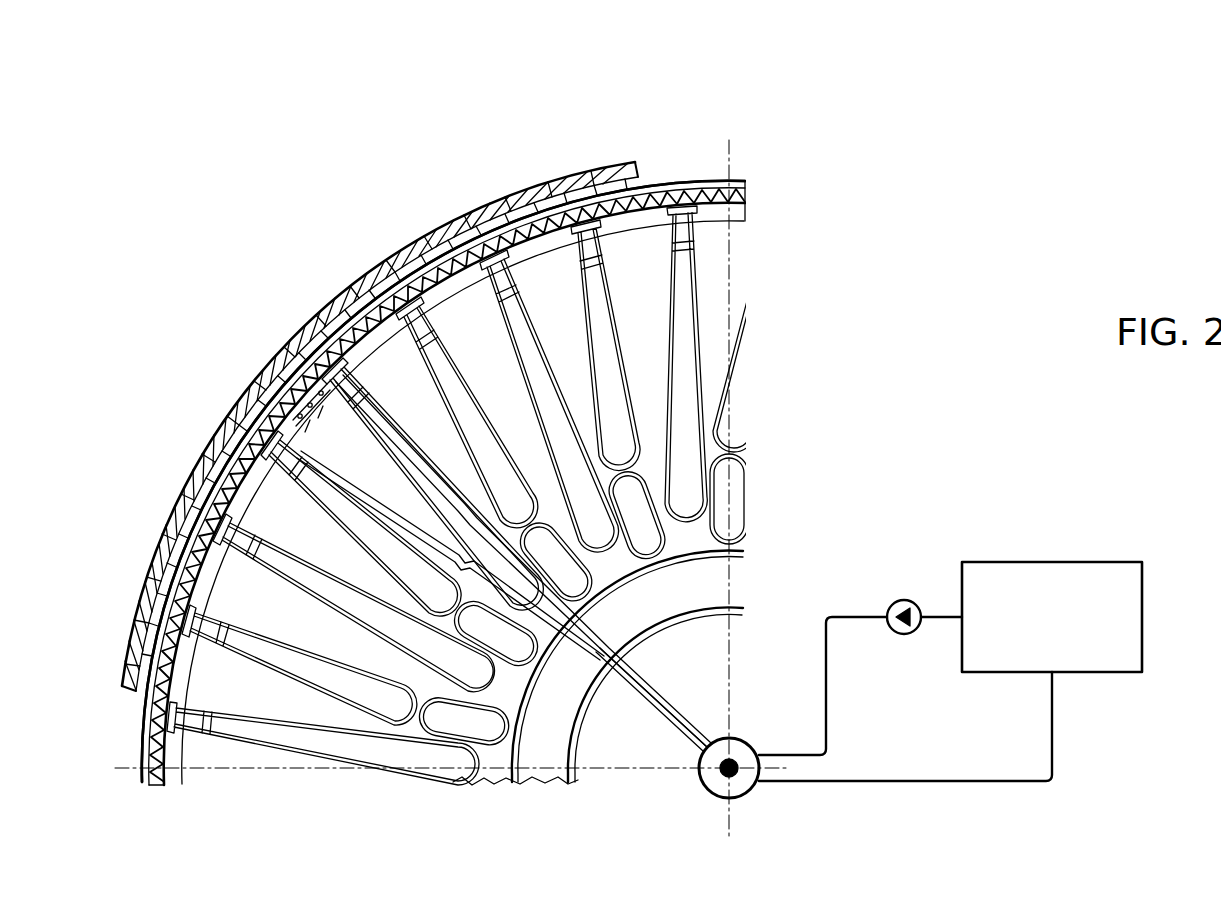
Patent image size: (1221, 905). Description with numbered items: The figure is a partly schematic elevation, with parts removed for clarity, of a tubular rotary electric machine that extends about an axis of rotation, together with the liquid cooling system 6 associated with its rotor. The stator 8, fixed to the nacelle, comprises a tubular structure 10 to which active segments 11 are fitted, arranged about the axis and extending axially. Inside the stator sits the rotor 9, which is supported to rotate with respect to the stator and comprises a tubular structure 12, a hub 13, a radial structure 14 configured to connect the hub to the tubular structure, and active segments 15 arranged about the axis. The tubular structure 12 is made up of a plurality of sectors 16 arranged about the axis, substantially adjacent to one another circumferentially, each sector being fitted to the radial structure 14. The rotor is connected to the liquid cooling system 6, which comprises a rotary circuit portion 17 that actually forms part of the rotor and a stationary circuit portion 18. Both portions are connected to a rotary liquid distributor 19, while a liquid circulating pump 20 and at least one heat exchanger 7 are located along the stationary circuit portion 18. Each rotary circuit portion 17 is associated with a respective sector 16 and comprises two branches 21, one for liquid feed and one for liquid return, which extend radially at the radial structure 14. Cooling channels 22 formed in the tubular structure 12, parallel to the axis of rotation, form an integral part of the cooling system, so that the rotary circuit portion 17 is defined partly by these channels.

The liquid cooling system 6 is at (907, 660).
The heat exchanger 7 is at (1043, 598).
The stator 8 is at (627, 161).
The rotor 9 is at (757, 332).
The tubular structure 10 is at (340, 290).
The active segments 11 is at (128, 660).
The tubular structure 12 is at (481, 457).
The hub 13 is at (700, 584).
The radial structure 14 is at (744, 401).
The active segments 15 is at (153, 773).
The sectors 16 is at (185, 777).
The rotary circuit portion 17 is at (658, 684).
The stationary circuit portion 18 is at (863, 794).
The rotary liquid distributor 19 is at (720, 790).
The liquid circulating pump 20 is at (905, 600).
The branches 21 is at (405, 525).
The cooling channels 22 is at (312, 418).